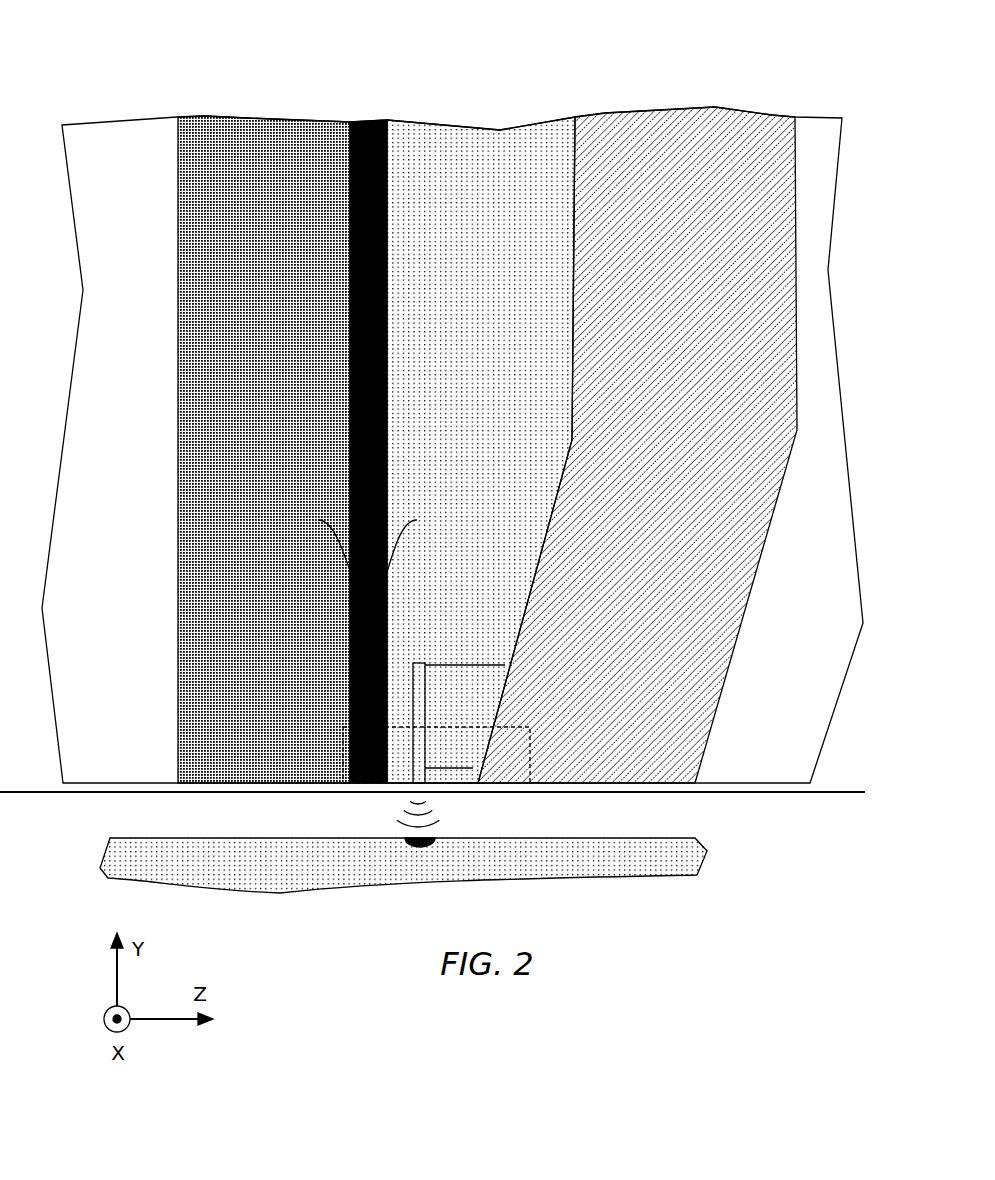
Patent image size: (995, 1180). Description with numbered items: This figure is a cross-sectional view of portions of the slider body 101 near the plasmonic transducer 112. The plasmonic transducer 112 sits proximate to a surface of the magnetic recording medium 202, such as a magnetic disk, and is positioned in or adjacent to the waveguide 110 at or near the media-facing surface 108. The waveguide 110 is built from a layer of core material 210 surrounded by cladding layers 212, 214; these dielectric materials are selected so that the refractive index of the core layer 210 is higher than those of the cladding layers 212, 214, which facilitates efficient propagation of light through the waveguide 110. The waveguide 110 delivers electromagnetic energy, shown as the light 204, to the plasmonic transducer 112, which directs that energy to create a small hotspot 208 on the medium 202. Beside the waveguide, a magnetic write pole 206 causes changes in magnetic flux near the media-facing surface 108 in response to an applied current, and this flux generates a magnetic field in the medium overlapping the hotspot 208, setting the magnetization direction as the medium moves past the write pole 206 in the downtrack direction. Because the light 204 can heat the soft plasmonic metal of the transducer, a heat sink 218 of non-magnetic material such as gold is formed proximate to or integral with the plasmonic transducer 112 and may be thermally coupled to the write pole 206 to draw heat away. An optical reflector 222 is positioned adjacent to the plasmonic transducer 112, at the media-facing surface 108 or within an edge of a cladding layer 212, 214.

The slider body 101 is at (100, 46).
The waveguide 110 is at (185, 80).
The cladding layer 214 is at (205, 115).
The core layer 210 is at (373, 120).
The cladding layer 212 is at (418, 137).
The magnetic write pole 206 is at (698, 107).
The light 204 is at (337, 537).
The heat sink 218 is at (468, 677).
The optical reflector 222 is at (500, 760).
The plasmonic transducer 112 is at (413, 790).
The media-facing surface 108 is at (753, 790).
The magnetic recording medium 202 is at (170, 863).
The hotspot 208 is at (420, 850).